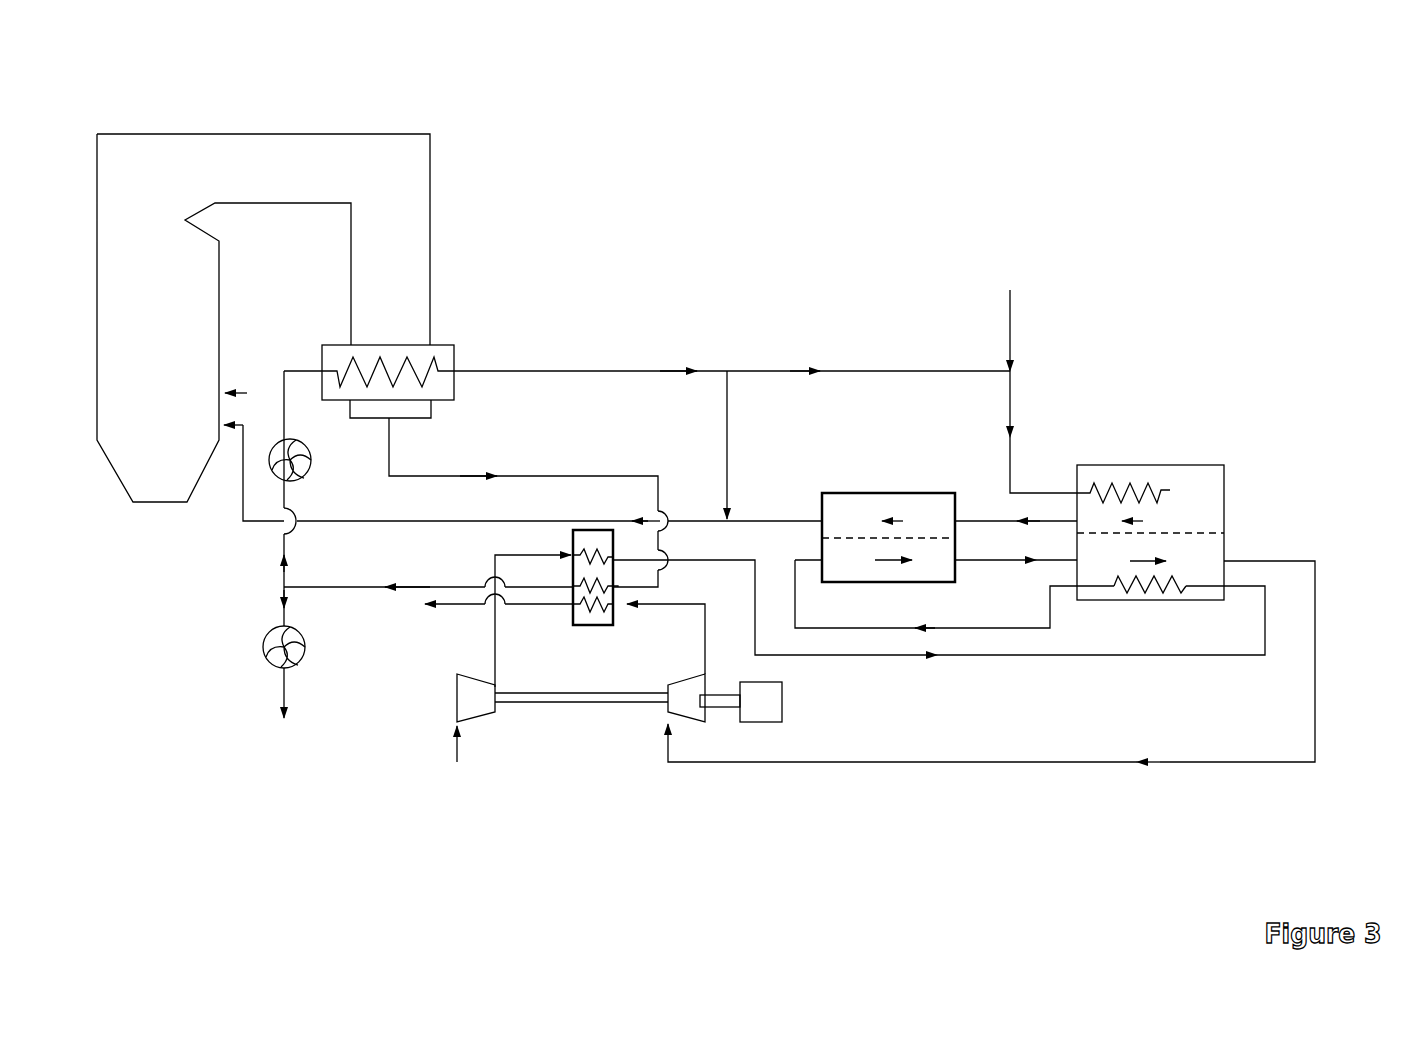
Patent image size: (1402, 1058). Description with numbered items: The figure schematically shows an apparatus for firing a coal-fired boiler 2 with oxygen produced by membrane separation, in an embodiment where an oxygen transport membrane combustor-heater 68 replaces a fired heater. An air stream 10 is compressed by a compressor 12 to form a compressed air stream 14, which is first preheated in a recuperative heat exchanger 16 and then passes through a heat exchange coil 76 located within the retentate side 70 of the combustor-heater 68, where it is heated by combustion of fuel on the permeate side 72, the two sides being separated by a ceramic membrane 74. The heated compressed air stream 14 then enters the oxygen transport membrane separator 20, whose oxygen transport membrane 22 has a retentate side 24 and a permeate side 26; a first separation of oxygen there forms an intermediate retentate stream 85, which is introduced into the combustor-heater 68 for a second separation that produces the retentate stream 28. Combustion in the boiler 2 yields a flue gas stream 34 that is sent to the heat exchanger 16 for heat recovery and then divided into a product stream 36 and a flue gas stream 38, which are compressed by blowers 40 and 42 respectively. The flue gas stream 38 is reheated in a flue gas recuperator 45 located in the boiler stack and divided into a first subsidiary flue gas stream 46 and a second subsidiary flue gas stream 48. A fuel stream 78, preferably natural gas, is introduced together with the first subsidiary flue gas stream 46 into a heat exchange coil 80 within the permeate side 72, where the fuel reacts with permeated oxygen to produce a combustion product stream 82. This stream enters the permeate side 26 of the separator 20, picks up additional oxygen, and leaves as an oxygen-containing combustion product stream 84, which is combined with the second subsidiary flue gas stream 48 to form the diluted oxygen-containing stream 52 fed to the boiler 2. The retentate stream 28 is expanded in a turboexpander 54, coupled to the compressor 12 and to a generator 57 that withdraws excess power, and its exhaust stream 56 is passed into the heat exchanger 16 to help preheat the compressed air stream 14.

The boiler 2 is at (162, 170).
The air stream 10 is at (457, 760).
The compressor 12 is at (470, 707).
The compressed air stream 14 is at (498, 627).
The recuperative heat exchanger 16 is at (591, 626).
The oxygen transport membrane separator 20 is at (912, 491).
The oxygen transport membrane 22 is at (912, 537).
The retentate side 24 is at (863, 573).
The permeate side 26 is at (862, 520).
The retentate stream 28 is at (1317, 680).
The flue gas stream 34 is at (540, 476).
The product stream 36 is at (284, 695).
The flue gas stream 38 is at (296, 369).
The blower 40 is at (257, 655).
The blower 42 is at (310, 466).
The flue gas recuperator 45 is at (445, 342).
The first subsidiary flue gas stream 46 is at (860, 370).
The second subsidiary flue gas stream 48 is at (722, 448).
The diluted oxygen-containing stream 52 is at (403, 521).
The turboexpander 54 is at (683, 693).
The exhaust stream 56 is at (688, 602).
The generator 57 is at (755, 708).
The oxygen transport membrane combustor-heater 68 is at (1159, 461).
The retentate side 70 is at (1183, 560).
The permeate side 72 is at (1200, 480).
The ceramic membrane 74 is at (1178, 530).
The heat exchange coil 76 is at (1128, 593).
The fuel stream 78 is at (1010, 317).
The heat exchange coil 80 is at (1108, 485).
The combustion product stream 82 is at (993, 518).
The oxygen-containing combustion product stream 84 is at (778, 517).
The intermediate retentate stream 85 is at (983, 560).